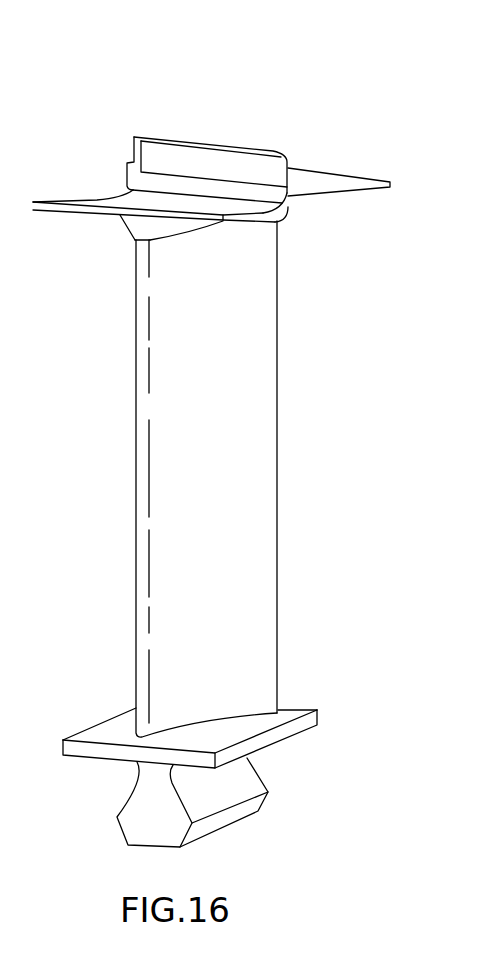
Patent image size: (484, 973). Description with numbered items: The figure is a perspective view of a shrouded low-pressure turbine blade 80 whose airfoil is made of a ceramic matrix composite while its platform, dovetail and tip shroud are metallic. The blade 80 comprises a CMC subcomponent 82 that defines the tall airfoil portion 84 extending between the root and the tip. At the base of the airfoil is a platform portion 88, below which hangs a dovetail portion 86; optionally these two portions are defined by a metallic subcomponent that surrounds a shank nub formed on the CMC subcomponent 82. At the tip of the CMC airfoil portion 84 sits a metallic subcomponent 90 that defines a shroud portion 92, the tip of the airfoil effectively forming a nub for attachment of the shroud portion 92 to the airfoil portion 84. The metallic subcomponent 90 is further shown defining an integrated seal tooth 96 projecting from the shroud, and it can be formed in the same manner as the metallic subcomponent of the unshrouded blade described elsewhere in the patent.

The turbine blade 80 is at (57, 130).
The CMC subcomponent 82 is at (110, 498).
The airfoil portion 84 is at (267, 498).
The dovetail portion 86 is at (232, 810).
The platform portion 88 is at (107, 730).
The metallic subcomponent 90 is at (325, 118).
The shroud portion 92 is at (290, 193).
The seal tooth 96 is at (168, 152).